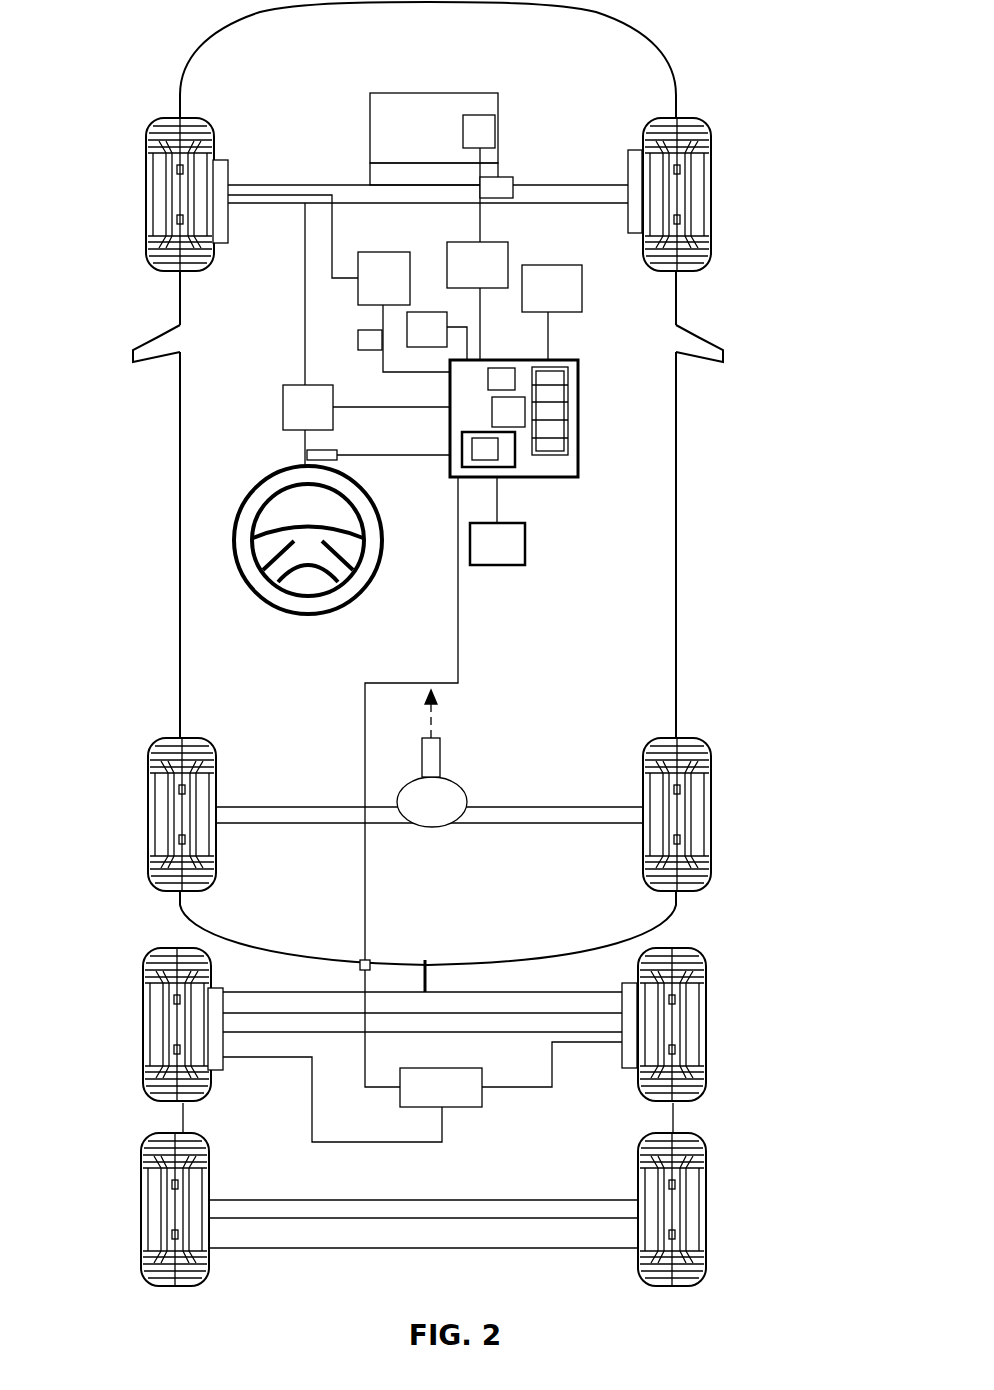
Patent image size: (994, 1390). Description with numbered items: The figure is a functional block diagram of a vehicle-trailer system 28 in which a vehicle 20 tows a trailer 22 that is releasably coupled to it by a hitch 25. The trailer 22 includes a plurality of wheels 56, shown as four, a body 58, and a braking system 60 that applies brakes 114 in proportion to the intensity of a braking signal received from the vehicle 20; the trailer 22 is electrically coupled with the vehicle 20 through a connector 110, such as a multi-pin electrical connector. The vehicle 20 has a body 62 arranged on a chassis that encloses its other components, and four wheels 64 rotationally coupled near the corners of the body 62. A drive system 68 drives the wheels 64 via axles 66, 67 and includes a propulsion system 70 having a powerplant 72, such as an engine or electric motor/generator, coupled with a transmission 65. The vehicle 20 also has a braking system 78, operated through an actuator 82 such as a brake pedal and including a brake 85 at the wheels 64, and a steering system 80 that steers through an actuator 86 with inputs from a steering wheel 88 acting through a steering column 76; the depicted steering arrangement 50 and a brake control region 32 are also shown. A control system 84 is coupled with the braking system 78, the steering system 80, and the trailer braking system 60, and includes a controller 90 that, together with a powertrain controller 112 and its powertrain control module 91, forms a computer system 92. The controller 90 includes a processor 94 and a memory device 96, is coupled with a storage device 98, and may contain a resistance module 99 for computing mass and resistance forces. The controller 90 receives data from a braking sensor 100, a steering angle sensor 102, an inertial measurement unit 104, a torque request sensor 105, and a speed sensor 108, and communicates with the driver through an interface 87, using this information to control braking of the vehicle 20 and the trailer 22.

The vehicle 20 is at (640, 32).
The trailer 22 is at (726, 963).
The hitch 25 is at (428, 985).
The vehicle-trailer system 28 is at (734, 496).
The brake control system 32 is at (514, 492).
The steering system 50 is at (278, 283).
The wheels 56 is at (142, 1025).
The body 58 is at (677, 1118).
The braking system 60 is at (478, 1126).
The body 62 is at (180, 543).
The wheels 64 is at (145, 193).
The transmission 65 is at (368, 178).
The axle 66 is at (566, 185).
The axle 67 is at (545, 807).
The drive system 68 is at (312, 135).
The propulsion system 70 is at (367, 106).
The powerplant 72 is at (447, 145).
The steering column 76 is at (305, 312).
The braking system 78 is at (336, 310).
The steering system 80 is at (394, 620).
The actuator 82 is at (370, 293).
The control system 84 is at (559, 598).
The brake 85 is at (224, 158).
The actuator 86 is at (283, 410).
The interface 87 is at (413, 344).
The steering wheel 88 is at (263, 594).
The controller 90 is at (458, 411).
The powertrain control module 91 is at (466, 145).
The computer system 92 is at (584, 369).
The processor 94 is at (502, 368).
The memory device 96 is at (552, 457).
The storage device 98 is at (470, 548).
The resistance module 99 is at (497, 423).
The braking sensor 100 is at (370, 350).
The steering angle sensor 102 is at (306, 455).
The inertial measurement unit 104 is at (533, 302).
The torque request sensor 105 is at (458, 279).
The speed sensor 108 is at (515, 177).
The connector 110 is at (360, 962).
The powertrain controller 112 is at (482, 468).
The brakes 114 is at (221, 1070).